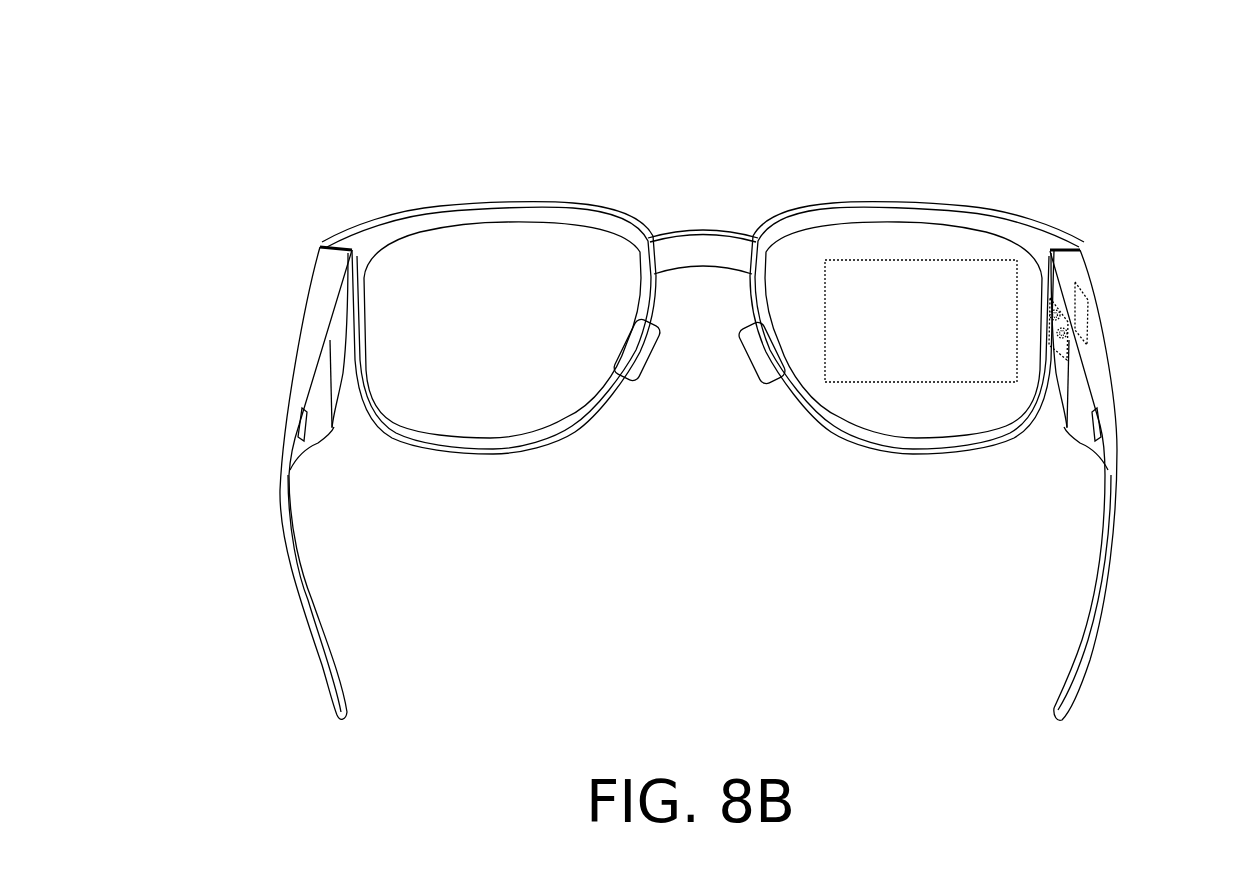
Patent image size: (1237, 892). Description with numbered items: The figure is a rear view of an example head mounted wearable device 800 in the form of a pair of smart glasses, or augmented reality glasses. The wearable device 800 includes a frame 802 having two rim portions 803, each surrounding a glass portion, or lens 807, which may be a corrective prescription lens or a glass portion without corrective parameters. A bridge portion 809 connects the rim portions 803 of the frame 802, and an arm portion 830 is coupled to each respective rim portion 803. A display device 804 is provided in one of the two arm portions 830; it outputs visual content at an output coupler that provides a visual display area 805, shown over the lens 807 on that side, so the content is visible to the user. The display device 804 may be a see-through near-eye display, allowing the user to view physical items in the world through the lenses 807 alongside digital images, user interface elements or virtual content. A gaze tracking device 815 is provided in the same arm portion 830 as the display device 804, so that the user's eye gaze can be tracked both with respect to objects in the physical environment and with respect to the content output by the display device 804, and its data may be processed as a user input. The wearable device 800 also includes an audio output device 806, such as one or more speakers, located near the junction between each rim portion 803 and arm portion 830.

The head mounted wearable device 800 is at (367, 160).
The frame 802 is at (520, 201).
The rim portion 803 is at (507, 453).
The display device 804 is at (1094, 299).
The visual display area 805 is at (823, 328).
The audio output device 806 is at (308, 433).
The lens 807 is at (433, 410).
The bridge portion 809 is at (708, 236).
The gaze tracking device 815 is at (1043, 310).
The arm portion 830 is at (272, 437).